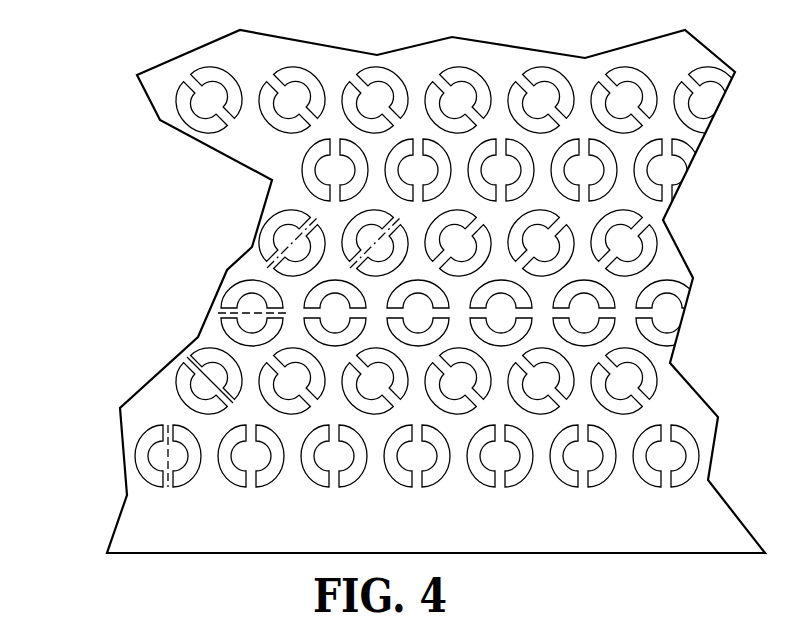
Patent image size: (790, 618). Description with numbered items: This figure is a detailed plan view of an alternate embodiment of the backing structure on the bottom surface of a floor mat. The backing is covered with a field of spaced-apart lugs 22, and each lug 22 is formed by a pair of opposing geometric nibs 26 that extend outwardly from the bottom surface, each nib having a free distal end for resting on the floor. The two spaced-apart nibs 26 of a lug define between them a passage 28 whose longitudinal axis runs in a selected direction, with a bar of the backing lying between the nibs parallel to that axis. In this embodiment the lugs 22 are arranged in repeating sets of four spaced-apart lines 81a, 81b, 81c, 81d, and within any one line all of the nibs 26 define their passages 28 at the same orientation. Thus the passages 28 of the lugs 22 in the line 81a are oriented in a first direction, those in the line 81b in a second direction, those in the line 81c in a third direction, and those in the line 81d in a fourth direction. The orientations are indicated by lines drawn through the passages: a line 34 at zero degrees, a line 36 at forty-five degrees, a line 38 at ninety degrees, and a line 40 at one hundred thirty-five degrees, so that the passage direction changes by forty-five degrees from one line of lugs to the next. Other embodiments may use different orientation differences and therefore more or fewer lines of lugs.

The lug 22 is at (197, 406).
The nib 26 is at (288, 222).
The passage 28 is at (252, 477).
The line oriented at 0° 34 is at (270, 312).
The line oriented at 45° 36 is at (317, 220).
The line oriented at 90° 38 is at (167, 487).
The line oriented at 135° 40 is at (187, 357).
The first line of lugs 81a is at (254, 138).
The second line of lugs 81b is at (126, 68).
The third line of lugs 81c is at (212, 281).
The fourth line of lugs 81d is at (238, 210).